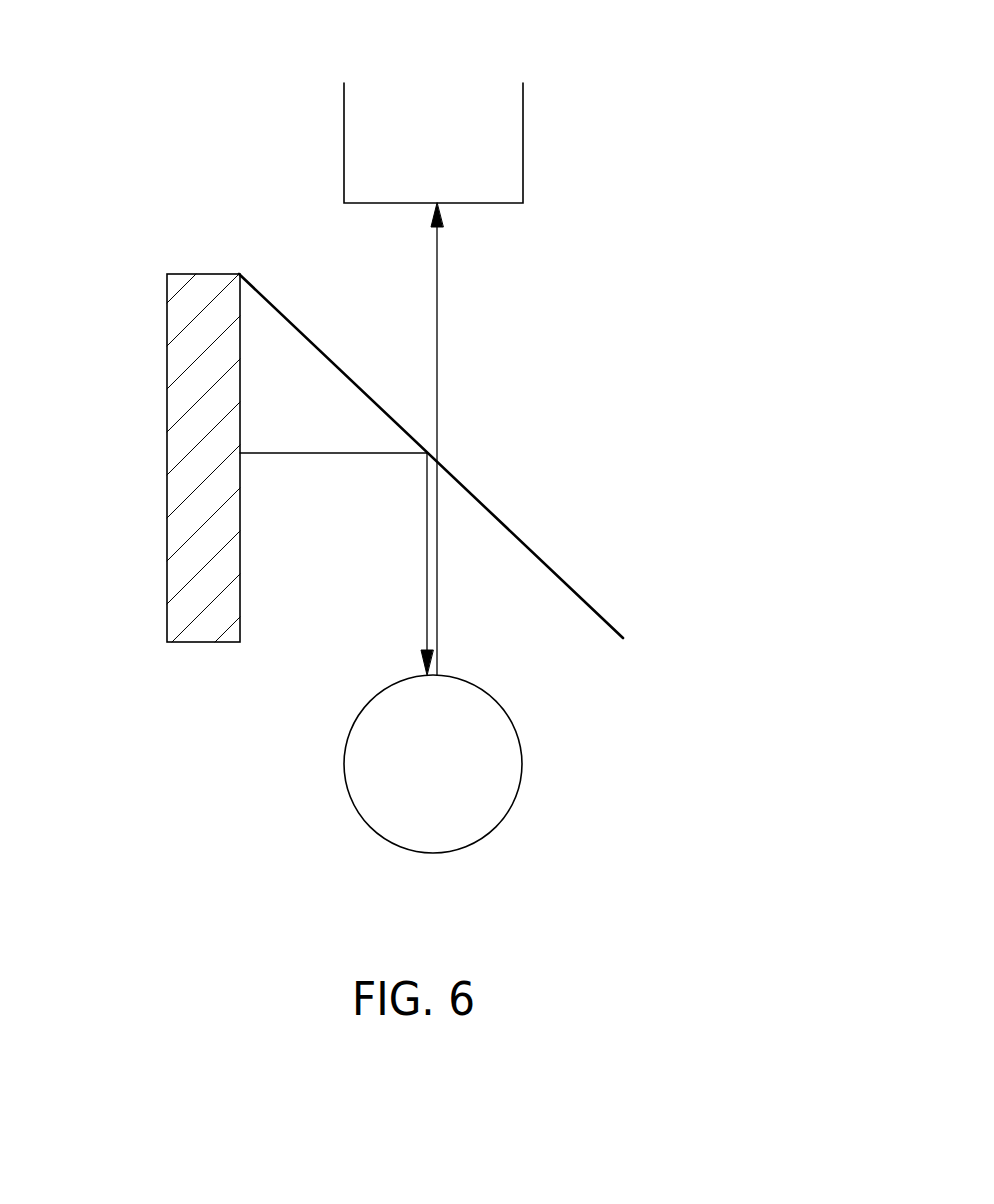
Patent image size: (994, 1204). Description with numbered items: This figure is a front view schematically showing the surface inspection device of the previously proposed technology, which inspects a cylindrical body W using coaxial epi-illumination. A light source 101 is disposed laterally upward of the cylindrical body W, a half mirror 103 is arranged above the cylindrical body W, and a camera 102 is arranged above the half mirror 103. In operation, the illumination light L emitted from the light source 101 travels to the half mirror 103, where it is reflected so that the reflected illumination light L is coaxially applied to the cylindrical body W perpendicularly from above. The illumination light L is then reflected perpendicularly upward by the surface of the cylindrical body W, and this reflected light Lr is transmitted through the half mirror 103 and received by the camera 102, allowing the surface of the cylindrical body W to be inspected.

The light source 101 is at (183, 570).
The camera 102 is at (503, 133).
The half mirror 103 is at (528, 547).
The illumination light L is at (299, 452).
The reflected light Lr is at (437, 315).
The cylindrical body W is at (523, 760).